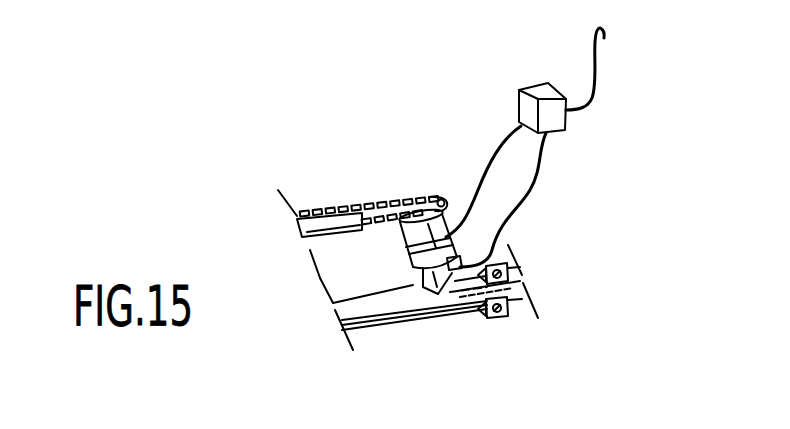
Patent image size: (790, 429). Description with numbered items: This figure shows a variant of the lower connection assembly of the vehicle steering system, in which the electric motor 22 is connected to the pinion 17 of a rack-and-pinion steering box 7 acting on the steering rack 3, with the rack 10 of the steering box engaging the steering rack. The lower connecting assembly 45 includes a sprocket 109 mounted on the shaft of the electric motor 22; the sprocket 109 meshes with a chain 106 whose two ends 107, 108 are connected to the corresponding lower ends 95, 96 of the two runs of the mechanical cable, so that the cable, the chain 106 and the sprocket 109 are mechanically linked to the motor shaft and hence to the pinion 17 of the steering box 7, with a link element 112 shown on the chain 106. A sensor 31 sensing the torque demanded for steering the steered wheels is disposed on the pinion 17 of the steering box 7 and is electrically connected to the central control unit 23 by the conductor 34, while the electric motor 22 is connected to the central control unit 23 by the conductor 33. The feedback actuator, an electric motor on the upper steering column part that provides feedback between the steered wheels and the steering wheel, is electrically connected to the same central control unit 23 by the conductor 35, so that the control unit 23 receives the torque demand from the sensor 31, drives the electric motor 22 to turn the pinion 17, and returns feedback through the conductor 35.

The steering rack 3 is at (360, 340).
The steering box 7 is at (478, 320).
The rail 10 is at (393, 313).
The pinion 17 is at (447, 282).
The electric motor 22 is at (400, 242).
The central control unit 23 is at (539, 85).
The sensor 31 is at (420, 297).
The conductor 33 is at (497, 143).
The conductor 34 is at (536, 187).
The conductor 35 is at (598, 77).
The lower connecting assembly 45 is at (499, 356).
The lower end of cable run 95 is at (288, 208).
The lower end of cable run 96 is at (300, 232).
The chain 106 is at (357, 212).
The chain end 107 is at (317, 214).
The chain end 108 is at (310, 250).
The sprocket 109 is at (443, 197).
The chain link 112 is at (413, 203).